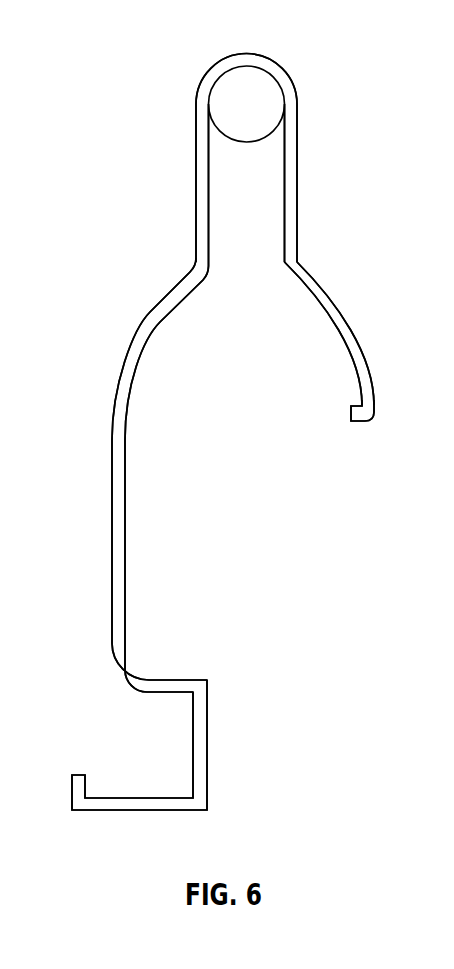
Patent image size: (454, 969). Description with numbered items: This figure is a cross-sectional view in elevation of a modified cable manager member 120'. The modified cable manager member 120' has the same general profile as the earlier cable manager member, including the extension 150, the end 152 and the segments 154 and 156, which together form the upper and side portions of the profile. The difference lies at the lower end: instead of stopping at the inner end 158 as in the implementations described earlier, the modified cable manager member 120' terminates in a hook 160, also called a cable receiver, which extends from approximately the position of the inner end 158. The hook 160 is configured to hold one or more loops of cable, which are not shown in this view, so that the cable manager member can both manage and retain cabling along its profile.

The modified cable manager member 120' is at (223, 415).
The extension 150 is at (297, 168).
The end 152 is at (368, 420).
The segment 154 is at (350, 320).
The segment 156 is at (147, 315).
The inner end 158 is at (190, 697).
The hook 160 is at (109, 770).